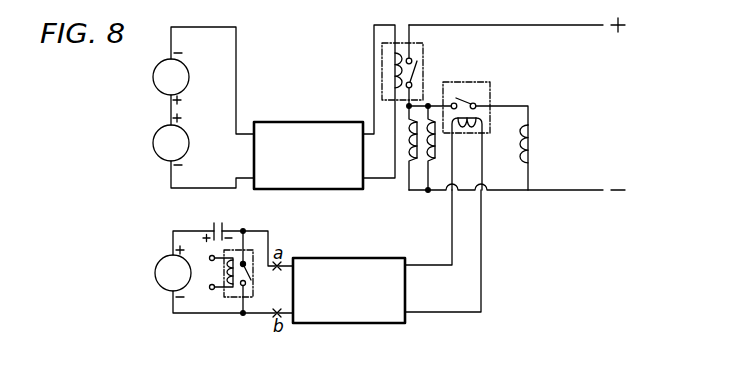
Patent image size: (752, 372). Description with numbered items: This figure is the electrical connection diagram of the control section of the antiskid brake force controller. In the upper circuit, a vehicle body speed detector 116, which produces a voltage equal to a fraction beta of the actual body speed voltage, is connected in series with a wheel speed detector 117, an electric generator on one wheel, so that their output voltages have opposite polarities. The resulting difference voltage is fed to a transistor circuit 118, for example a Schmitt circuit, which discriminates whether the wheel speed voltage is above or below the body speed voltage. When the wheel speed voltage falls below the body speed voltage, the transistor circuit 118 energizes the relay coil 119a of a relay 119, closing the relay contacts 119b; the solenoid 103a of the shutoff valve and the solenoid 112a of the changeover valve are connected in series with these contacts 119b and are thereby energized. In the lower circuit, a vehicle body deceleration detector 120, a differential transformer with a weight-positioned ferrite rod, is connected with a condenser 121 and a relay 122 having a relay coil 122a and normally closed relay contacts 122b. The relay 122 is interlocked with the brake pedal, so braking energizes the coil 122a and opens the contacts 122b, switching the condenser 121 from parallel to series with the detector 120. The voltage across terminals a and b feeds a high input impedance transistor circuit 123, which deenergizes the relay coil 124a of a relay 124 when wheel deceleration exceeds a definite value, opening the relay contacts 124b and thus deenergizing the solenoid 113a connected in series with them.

The vehicle body speed detector 116 is at (154, 140).
The wheel speed detector 117 is at (153, 79).
The transistor circuit 118 is at (297, 122).
The relay 119 is at (401, 64).
The relay coil 119a is at (392, 71).
The relay contacts 119b is at (419, 73).
The solenoid 112a is at (408, 162).
The solenoid 103a is at (428, 162).
The relay 124 is at (490, 119).
The relay coil 124a is at (480, 128).
The relay contacts 124b is at (472, 100).
The solenoid 113a is at (533, 131).
The vehicle body deceleration detector 120 is at (155, 280).
The condenser 121 is at (214, 222).
The relay 122 is at (242, 299).
The relay coil 122a is at (227, 290).
The relay contacts 122b is at (266, 282).
The transistor circuit 123 is at (347, 258).